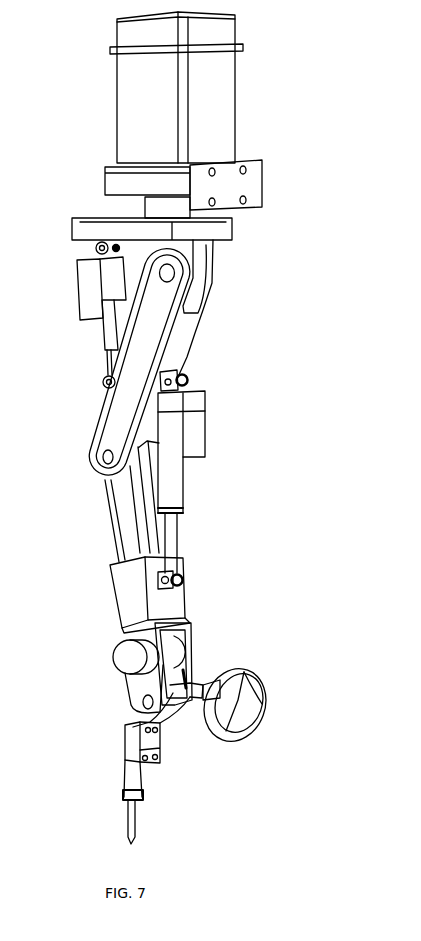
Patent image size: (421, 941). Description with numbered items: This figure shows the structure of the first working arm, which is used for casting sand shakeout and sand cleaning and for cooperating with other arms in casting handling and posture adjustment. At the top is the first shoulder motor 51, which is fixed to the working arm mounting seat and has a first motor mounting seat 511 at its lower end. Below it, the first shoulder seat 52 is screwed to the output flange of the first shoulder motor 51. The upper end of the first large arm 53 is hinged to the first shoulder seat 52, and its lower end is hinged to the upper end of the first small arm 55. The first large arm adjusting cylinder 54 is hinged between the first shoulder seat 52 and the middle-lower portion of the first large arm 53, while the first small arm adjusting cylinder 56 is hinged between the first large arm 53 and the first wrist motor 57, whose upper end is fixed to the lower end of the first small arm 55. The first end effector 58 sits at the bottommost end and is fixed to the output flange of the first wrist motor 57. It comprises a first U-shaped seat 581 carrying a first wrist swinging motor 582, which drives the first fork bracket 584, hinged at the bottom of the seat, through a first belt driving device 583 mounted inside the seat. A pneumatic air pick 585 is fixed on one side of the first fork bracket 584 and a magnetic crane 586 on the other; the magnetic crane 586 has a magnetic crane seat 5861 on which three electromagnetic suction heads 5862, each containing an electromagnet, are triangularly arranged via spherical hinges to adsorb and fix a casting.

The first shoulder motor 51 is at (118, 73).
The first motor mounting seat 511 is at (260, 176).
The first shoulder seat 52 is at (95, 218).
The first large arm 53 is at (187, 337).
The first large arm adjusting cylinder 54 is at (80, 307).
The first small arm 55 is at (108, 498).
The first small arm adjusting cylinder 56 is at (182, 490).
The first wrist motor 57 is at (118, 593).
The first end effector 58 is at (152, 669).
The first U-shaped seat 581 is at (132, 700).
The first wrist swinging motor 582 is at (122, 663).
The first belt driving device 583 is at (185, 662).
The first fork bracket 584 is at (170, 718).
The pneumatic air pick 585 is at (140, 772).
The magnetic crane 586 is at (251, 705).
The magnetic crane seat 5861 is at (212, 680).
The electromagnetic suction heads 5862 is at (253, 690).